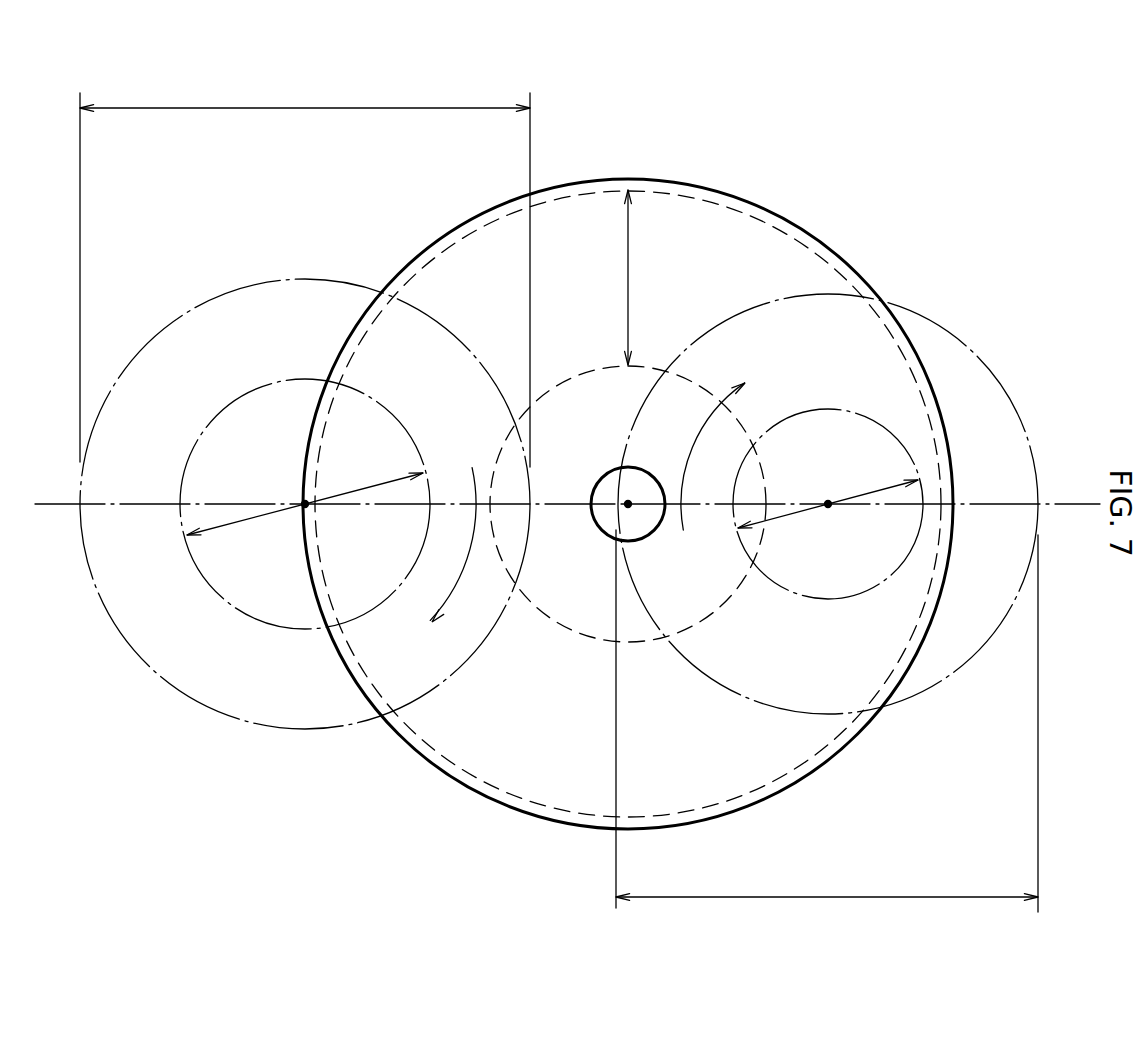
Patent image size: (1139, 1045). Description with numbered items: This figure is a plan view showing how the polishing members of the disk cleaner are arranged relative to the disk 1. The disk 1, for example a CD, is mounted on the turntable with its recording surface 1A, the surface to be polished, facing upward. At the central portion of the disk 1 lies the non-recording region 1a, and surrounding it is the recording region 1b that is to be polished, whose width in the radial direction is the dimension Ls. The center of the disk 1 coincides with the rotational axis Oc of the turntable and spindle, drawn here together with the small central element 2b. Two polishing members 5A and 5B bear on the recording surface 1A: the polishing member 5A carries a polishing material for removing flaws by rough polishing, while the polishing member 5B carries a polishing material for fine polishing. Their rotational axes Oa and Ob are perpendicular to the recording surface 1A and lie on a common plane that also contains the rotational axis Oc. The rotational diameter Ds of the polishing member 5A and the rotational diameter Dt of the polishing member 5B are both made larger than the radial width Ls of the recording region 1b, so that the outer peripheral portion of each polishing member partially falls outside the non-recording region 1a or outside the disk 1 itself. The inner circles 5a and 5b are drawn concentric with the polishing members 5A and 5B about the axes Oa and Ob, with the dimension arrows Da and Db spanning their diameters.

The disk 1 is at (687, 222).
The recording surface 1A is at (733, 752).
The non-recording region 1a is at (558, 583).
The recording region 1b is at (560, 747).
The rotary shaft 2b is at (607, 487).
The rotational axis of the turntable Oc is at (630, 507).
The polishing member 5A is at (227, 717).
The first side cutter (small diameter) 5a is at (272, 384).
The rotational axis of polishing member 5A Oa is at (305, 503).
The diameter of first side cutter Da is at (272, 515).
The polishing member 5B is at (962, 672).
The second side cutter (small diameter) 5b is at (783, 416).
The rotational axis of polishing member 5B Ob is at (830, 508).
The diameter of second side cutter Db is at (850, 495).
The rotational diameter of polishing member 5A Ds is at (306, 108).
The rotational diameter of polishing member 5B Dt is at (828, 898).
The width in the radial direction of the recording region Ls is at (627, 258).